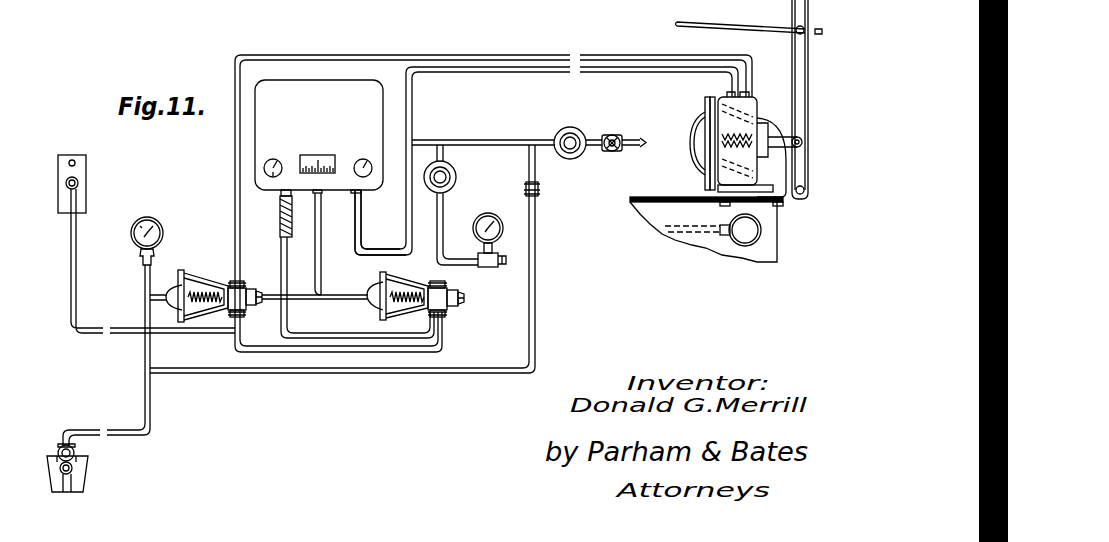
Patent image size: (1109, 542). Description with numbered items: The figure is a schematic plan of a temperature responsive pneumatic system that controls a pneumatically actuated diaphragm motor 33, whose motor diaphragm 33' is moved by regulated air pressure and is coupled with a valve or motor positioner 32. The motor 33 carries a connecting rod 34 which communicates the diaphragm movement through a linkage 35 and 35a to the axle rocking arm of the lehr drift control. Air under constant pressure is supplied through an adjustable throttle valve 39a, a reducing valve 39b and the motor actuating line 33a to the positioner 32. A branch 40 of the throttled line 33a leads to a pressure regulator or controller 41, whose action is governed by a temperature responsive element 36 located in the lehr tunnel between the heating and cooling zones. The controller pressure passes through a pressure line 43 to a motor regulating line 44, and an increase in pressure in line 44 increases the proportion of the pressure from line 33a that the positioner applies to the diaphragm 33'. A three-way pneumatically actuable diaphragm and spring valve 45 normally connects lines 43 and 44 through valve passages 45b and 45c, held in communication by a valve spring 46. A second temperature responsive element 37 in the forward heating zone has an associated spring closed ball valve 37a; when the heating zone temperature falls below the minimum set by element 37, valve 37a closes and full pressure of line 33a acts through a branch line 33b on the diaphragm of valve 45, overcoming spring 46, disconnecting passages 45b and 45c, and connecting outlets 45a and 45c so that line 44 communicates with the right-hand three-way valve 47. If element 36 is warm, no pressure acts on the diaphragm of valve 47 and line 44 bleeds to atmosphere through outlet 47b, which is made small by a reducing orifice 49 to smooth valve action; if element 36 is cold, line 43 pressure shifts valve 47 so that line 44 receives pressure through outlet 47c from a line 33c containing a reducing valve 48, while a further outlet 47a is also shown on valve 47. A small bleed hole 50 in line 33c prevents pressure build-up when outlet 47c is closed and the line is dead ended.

The motor positioner 32 is at (755, 98).
The diaphragm motor 33 is at (675, 143).
The motor diaphragm 33' is at (706, 218).
The motor actuating line 33a is at (468, 140).
The branch line 33b is at (346, 373).
The line 33c is at (445, 155).
The connecting rod 34 is at (772, 132).
The linkage 35 is at (792, 48).
The linkage 35a is at (706, 22).
The temperature responsive element 36 is at (86, 183).
The second temperature responsive element 37 is at (96, 478).
The valve 37a is at (76, 449).
The adjustable throttle valve 39a is at (617, 134).
The reducing valve 39b is at (585, 131).
The branch 40 is at (405, 213).
The pressure regulator or controller 41 is at (288, 125).
The pressure line 43 is at (322, 252).
The motor regulating line 44 is at (266, 61).
The three-way pneumatically actuable diaphragm and spring valve 45 is at (228, 300).
The valve outlet 45a is at (246, 306).
The valve passage 45b is at (252, 290).
The valve passage 45c is at (236, 282).
The valve spring 46 is at (205, 303).
The right-hand three-way valve 47 is at (438, 297).
The valve outlet 47a is at (448, 313).
The valve outlet 47b is at (450, 288).
The valve outlet 47c is at (433, 283).
The reducing valve 48 is at (457, 178).
The reducing orifice 49 is at (465, 300).
The bleed hole 50 is at (501, 259).